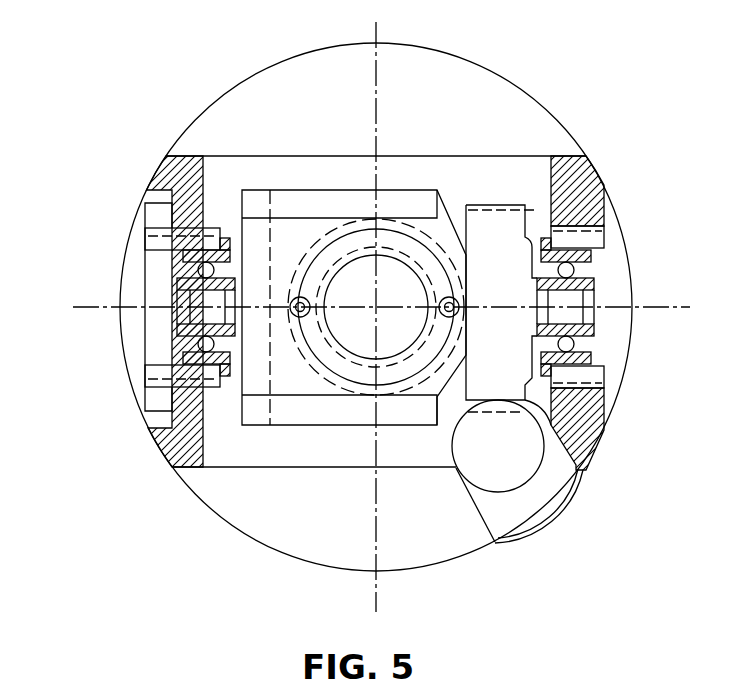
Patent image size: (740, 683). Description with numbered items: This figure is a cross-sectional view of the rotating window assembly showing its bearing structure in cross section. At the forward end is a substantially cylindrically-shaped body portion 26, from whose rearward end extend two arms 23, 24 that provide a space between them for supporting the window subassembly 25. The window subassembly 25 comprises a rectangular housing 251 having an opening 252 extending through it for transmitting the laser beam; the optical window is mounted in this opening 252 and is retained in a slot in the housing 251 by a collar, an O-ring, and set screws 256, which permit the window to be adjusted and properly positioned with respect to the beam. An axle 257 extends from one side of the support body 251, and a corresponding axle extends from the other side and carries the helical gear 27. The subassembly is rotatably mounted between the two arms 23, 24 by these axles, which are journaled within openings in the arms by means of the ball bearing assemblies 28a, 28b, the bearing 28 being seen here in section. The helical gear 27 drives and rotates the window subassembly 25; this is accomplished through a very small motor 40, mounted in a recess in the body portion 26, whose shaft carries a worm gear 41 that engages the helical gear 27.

The arm 23 is at (586, 186).
The arm 24 is at (178, 167).
The window subassembly 25 is at (395, 188).
The body portion 26 is at (528, 127).
The helical gear 27 is at (498, 232).
The bearing 28 is at (568, 302).
The ball bearing assembly 28a is at (575, 268).
The ball bearing assembly 28b is at (183, 265).
The motor 40 is at (572, 507).
The worm gear 41 is at (530, 445).
The rectangular housing 251 is at (300, 412).
The opening 252 is at (370, 365).
The set screws 256 is at (300, 296).
The axle 257 is at (177, 318).